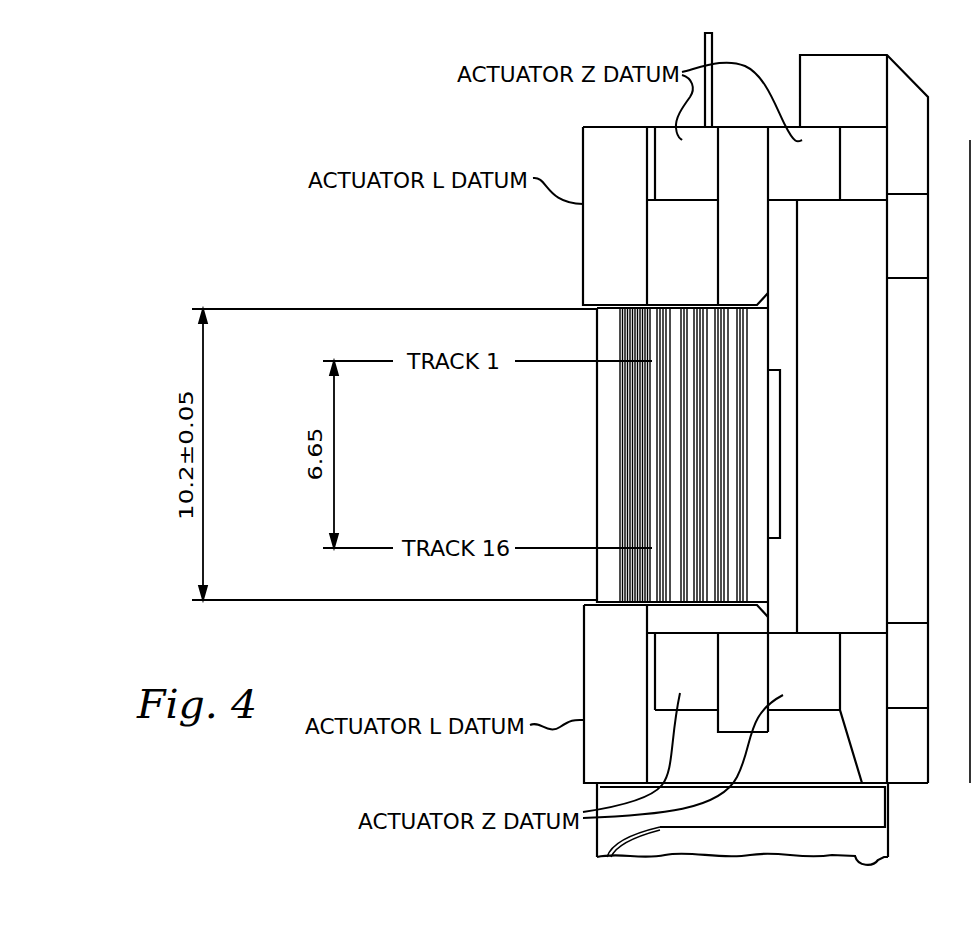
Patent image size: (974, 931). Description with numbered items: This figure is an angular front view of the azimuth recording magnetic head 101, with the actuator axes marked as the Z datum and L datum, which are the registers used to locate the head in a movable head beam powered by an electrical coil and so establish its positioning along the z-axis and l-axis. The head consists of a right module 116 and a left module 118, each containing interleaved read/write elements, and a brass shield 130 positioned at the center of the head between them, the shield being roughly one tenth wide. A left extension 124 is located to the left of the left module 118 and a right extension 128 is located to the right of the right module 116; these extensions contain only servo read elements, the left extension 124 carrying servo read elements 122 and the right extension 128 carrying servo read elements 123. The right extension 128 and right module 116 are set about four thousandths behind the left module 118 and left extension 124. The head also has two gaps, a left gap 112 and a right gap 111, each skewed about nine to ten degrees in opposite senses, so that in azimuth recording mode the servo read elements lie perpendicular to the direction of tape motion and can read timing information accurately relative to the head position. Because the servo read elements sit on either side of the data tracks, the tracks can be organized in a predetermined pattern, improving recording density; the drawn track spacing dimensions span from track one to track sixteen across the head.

The azimuth recording magnetic head 101 is at (569, 478).
The right gap 111 is at (715, 318).
The left gap 112 is at (641, 317).
The right module 116 is at (702, 317).
The left module 118 is at (663, 317).
The servo read elements 122 is at (619, 606).
The servo read elements 123 is at (737, 606).
The left extension 124 is at (597, 428).
The right extension 128 is at (770, 360).
The brass shield 130 is at (681, 317).